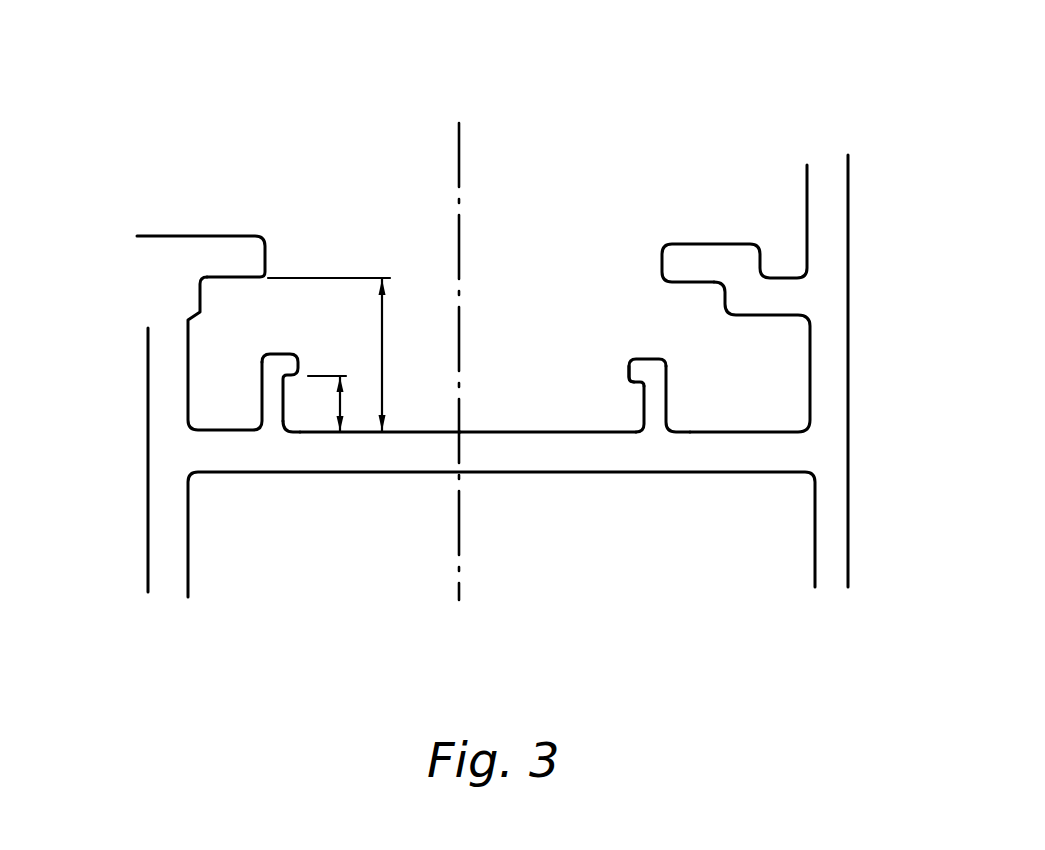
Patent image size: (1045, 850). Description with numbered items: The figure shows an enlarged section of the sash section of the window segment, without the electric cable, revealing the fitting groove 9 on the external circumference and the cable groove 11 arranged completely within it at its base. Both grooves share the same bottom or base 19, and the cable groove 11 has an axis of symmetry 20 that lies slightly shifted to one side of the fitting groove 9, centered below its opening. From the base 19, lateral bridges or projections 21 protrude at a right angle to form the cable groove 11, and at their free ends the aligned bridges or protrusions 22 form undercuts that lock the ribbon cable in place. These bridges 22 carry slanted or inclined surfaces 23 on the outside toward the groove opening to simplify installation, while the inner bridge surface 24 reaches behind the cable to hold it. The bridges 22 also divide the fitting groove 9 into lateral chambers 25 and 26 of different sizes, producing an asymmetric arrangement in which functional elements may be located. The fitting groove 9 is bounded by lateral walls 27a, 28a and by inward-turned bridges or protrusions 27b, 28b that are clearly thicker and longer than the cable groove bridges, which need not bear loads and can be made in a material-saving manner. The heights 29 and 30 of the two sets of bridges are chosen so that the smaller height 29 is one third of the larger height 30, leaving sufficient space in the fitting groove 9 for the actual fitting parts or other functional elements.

The fitting groove 9 is at (533, 260).
The cable groove 11 is at (425, 333).
The base 19 is at (512, 430).
The axis of symmetry 20 is at (460, 553).
The lateral bridges or projections 21 is at (273, 387).
The bridges or protrusions 22 is at (288, 366).
The slanted or inclined surfaces 23 is at (628, 372).
The inner bridge surface 24 is at (633, 382).
The lateral chamber 25 is at (228, 398).
The lateral chamber 26 is at (787, 380).
The lateral wall 27a is at (165, 362).
The bridge or protrusion 27b is at (233, 267).
The lateral wall 28a is at (828, 322).
The bridge or protrusion 28b is at (686, 262).
The smaller height 29 is at (337, 403).
The larger height 30 is at (380, 337).